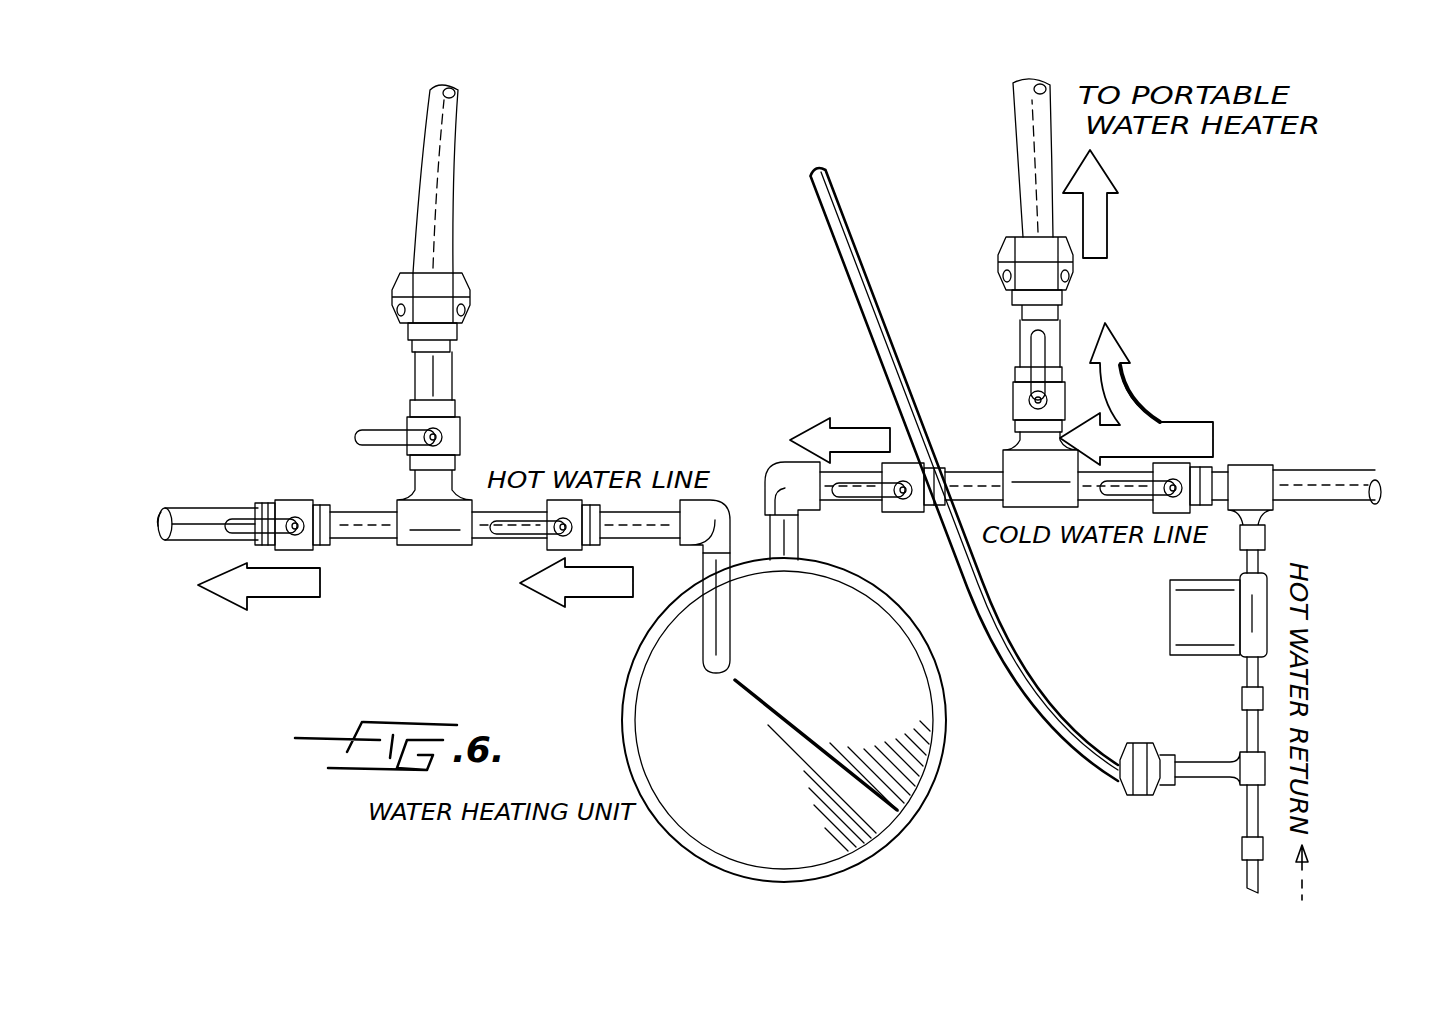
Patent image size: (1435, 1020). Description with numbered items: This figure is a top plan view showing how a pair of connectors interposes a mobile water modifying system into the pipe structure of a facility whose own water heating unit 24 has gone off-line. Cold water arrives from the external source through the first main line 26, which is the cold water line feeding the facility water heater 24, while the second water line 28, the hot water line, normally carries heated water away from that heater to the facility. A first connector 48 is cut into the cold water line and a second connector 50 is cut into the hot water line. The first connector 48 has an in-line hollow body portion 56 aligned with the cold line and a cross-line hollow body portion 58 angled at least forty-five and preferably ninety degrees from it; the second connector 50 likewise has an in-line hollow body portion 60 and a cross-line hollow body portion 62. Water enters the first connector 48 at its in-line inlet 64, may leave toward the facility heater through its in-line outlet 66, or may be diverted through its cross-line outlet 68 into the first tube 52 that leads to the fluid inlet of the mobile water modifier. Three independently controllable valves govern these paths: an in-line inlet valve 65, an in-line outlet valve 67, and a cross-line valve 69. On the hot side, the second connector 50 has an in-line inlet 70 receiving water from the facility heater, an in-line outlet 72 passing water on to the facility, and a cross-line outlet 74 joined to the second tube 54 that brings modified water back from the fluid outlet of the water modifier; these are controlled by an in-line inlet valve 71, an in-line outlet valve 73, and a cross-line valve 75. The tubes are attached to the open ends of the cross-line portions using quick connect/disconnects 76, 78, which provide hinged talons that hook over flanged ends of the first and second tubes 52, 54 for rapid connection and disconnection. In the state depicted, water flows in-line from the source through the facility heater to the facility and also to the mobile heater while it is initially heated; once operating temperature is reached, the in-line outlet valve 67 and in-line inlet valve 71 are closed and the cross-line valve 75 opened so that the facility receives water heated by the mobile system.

The facility water heater 24 is at (905, 728).
The first main line 26 is at (1352, 480).
The second water line 28 is at (180, 515).
The first connector 48 is at (1057, 561).
The second connector 50 is at (411, 571).
The first tube 52 is at (1030, 100).
The second tube 54 is at (440, 110).
The first connector in-line hollow body portion 56 is at (991, 479).
The first connector cross-line hollow body portion 58 is at (1062, 334).
The second connector in-line hollow body portion 60 is at (347, 511).
The second connector cross-line hollow body portion 62 is at (449, 381).
The first connector in-line inlet 64 is at (1180, 472).
The first connector in-line inlet valve 65 is at (1222, 477).
The first connector in-line outlet 66 is at (916, 512).
The first connector in-line outlet valve 67 is at (898, 497).
The first connector cross-line outlet 68 is at (1050, 412).
The first connector cross-line valve 69 is at (1030, 399).
The second connector in-line inlet 70 is at (574, 540).
The second connector in-line inlet valve 71 is at (574, 527).
The second connector in-line outlet 72 is at (206, 586).
The second connector in-line outlet valve 73 is at (292, 519).
The second connector cross-line outlet 74 is at (473, 452).
The second connector cross-line valve 75 is at (447, 437).
The quick connect/disconnect 76 is at (1038, 278).
The quick connect/disconnect 78 is at (445, 313).